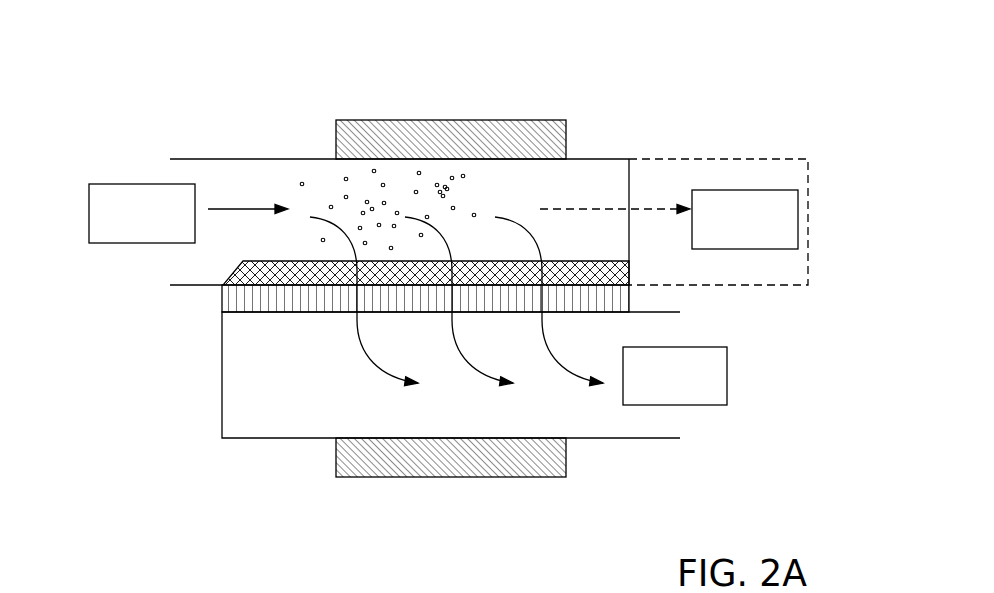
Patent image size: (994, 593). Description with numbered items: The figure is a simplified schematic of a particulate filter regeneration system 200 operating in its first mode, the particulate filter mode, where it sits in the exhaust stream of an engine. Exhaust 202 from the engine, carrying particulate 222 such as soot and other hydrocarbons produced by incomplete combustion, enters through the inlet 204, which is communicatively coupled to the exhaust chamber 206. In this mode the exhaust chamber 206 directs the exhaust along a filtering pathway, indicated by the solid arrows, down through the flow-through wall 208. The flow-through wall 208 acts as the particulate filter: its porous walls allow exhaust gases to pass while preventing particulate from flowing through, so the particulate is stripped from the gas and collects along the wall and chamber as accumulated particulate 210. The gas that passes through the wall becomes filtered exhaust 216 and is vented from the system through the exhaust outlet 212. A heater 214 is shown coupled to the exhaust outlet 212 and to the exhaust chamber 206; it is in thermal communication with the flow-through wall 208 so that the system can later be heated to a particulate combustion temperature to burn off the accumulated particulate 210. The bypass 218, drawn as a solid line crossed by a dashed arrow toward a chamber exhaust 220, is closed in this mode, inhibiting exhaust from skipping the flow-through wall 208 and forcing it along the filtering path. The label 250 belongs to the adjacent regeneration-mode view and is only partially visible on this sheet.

The particulate filter regeneration system 200 is at (213, 84).
The exhaust 202 is at (113, 184).
The inlet 204 is at (228, 185).
The exhaust chamber 206 is at (557, 194).
The flow-through wall 208 is at (222, 301).
The accumulated particulate 210 is at (243, 261).
The exhaust outlet 212 is at (305, 396).
The heater 214 is at (367, 120).
The filtered exhaust 216 is at (727, 392).
The bypass 218 is at (655, 269).
The chamber exhaust 220 is at (788, 190).
The particulate 222 is at (363, 192).
The system (next figure) 250 is at (172, 592).